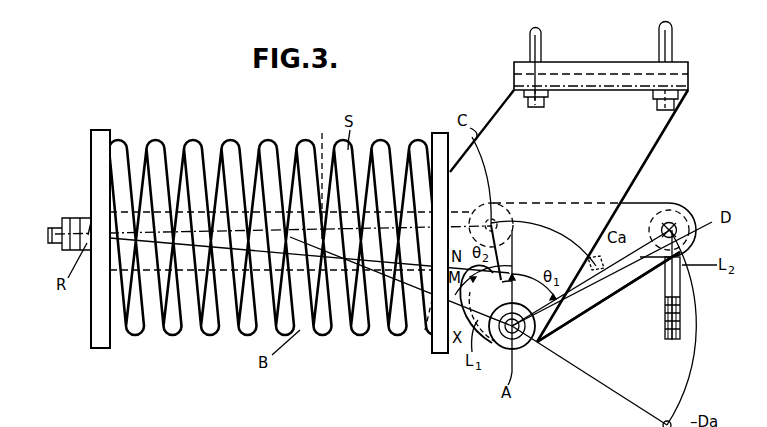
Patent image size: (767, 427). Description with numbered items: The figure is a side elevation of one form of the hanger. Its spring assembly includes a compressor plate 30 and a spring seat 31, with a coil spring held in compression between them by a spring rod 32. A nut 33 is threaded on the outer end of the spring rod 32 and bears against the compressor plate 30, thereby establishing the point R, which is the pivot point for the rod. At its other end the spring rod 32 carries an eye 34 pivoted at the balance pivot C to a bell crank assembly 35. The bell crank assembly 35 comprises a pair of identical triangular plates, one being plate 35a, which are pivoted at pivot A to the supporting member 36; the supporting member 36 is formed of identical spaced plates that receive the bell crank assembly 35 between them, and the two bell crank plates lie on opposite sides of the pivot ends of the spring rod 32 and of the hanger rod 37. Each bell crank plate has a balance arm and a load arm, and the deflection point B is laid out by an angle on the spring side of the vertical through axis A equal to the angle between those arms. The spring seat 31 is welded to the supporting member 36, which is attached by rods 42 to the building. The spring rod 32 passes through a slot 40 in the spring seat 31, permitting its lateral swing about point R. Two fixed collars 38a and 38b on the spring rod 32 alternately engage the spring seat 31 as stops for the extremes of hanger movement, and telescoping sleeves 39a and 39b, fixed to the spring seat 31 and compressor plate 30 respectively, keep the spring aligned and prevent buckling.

The compressor plate 30 is at (93, 172).
The spring seat 31 is at (440, 355).
The spring rod 32 is at (194, 230).
The nut 33 is at (90, 218).
The eye 34 is at (507, 212).
The bell crank assembly 35 is at (625, 302).
The bell crank plate 35a is at (575, 310).
The supporting member 36 is at (652, 156).
The hanger rod 37 is at (681, 297).
The fixed collar 38a is at (311, 176).
The fixed collar 38b is at (452, 205).
The telescoping sleeve 39a is at (362, 205).
The telescoping sleeve 39b is at (183, 177).
The slot 40 is at (425, 332).
The rods 42 is at (660, 44).